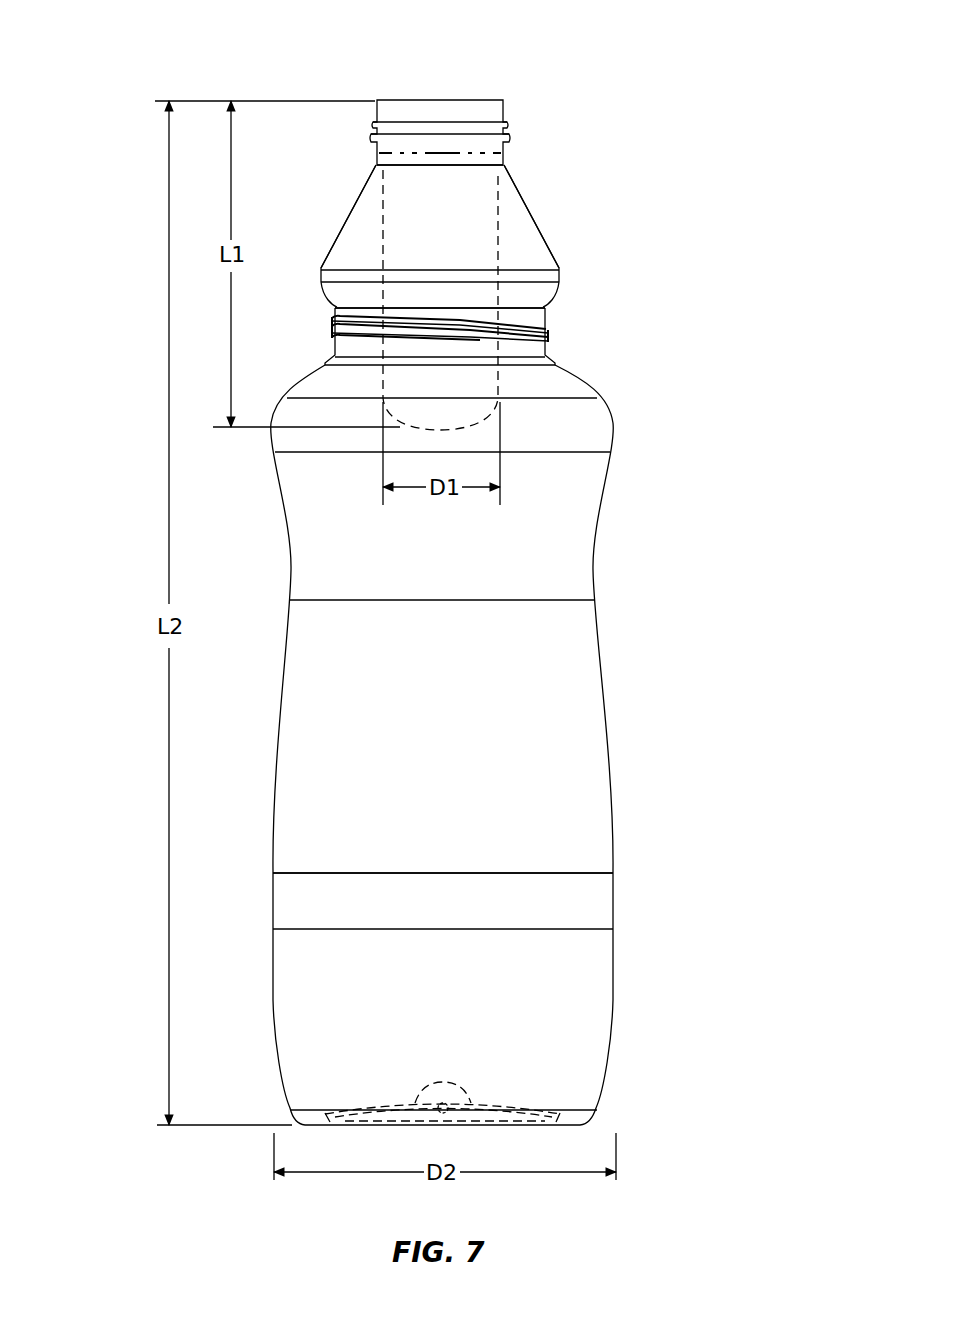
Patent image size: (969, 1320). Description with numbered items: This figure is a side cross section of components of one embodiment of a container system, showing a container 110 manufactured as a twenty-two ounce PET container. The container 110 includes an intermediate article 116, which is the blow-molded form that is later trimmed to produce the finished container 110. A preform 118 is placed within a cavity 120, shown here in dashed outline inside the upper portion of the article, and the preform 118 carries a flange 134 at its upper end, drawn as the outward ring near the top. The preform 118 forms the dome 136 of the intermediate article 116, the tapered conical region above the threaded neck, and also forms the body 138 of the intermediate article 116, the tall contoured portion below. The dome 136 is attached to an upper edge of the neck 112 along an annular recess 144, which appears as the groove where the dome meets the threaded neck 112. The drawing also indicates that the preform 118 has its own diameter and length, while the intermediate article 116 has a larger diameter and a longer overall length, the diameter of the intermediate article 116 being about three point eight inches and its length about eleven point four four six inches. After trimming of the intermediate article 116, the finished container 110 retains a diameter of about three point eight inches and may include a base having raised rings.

The container 110 is at (82, 30).
The intermediate article 116 is at (737, 689).
The cavity 120 is at (550, 534).
The flange 134 is at (511, 138).
The preform 118 is at (503, 225).
The dome 136 is at (367, 222).
The annular recess 144 is at (539, 317).
The neck 112 is at (548, 328).
The body 138 is at (303, 763).